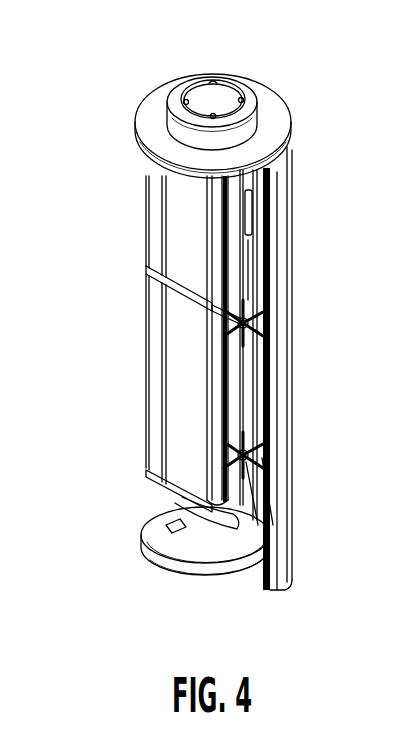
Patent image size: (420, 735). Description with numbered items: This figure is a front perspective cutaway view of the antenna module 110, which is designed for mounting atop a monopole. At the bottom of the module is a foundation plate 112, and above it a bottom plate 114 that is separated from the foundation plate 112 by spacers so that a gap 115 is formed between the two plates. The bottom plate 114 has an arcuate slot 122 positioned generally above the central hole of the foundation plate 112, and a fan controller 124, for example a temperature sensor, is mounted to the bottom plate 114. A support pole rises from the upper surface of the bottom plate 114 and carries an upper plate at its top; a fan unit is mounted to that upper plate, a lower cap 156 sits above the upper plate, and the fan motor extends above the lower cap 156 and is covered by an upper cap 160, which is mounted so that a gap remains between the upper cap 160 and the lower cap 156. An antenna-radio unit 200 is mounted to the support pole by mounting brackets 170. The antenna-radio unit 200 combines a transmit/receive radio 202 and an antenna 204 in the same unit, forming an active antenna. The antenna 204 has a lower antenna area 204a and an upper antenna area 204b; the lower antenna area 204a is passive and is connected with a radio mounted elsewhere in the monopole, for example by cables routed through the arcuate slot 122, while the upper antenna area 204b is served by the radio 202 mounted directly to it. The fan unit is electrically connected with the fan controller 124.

The antenna module 110 is at (348, 161).
The foundation plate 112 is at (247, 571).
The bottom plate 114 is at (155, 548).
The gap 115 is at (200, 574).
The arcuate slot 122 is at (147, 480).
The fan controller 124 is at (165, 525).
The lower cap 156 is at (273, 113).
The upper cap 160 is at (231, 85).
The mounting brackets 170 is at (280, 425).
The antenna-radio unit 200 is at (114, 331).
The transmit/receive radio 202 is at (248, 215).
The antenna 204 is at (118, 278).
The lower antenna area 204a is at (158, 418).
The upper antenna area 204b is at (155, 225).